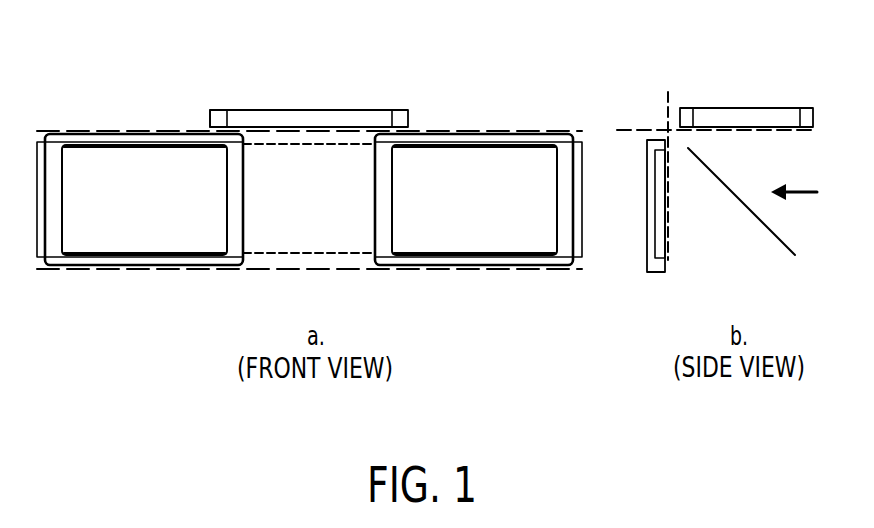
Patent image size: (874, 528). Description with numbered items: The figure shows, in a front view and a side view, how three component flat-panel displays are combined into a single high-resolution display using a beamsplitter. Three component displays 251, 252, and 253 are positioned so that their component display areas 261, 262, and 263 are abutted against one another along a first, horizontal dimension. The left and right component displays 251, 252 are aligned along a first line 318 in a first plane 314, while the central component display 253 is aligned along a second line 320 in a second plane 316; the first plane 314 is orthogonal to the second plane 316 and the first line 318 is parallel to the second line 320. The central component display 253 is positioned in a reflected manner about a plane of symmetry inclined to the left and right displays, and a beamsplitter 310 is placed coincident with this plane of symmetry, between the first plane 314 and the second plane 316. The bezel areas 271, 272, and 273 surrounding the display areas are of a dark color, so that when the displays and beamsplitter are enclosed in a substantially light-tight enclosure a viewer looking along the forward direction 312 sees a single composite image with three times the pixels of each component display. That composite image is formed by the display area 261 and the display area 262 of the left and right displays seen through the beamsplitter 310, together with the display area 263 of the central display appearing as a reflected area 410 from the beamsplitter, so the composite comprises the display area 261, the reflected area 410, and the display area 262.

The component display 251 is at (123, 131).
The component display 252 is at (457, 129).
The central component display 253 is at (302, 107).
The component display area 261 is at (63, 213).
The component display area 262 is at (557, 157).
The component display area 263 is at (227, 127).
The bezel area 271 is at (46, 256).
The bezel area 272 is at (536, 132).
The bezel area 273 is at (211, 123).
The beamsplitter 310 is at (283, 256).
The forward direction 312 is at (792, 192).
The first plane 314 is at (667, 102).
The second plane 316 is at (620, 131).
The first line 318 is at (525, 272).
The second line 320 is at (443, 130).
The reflected area 410 is at (335, 253).